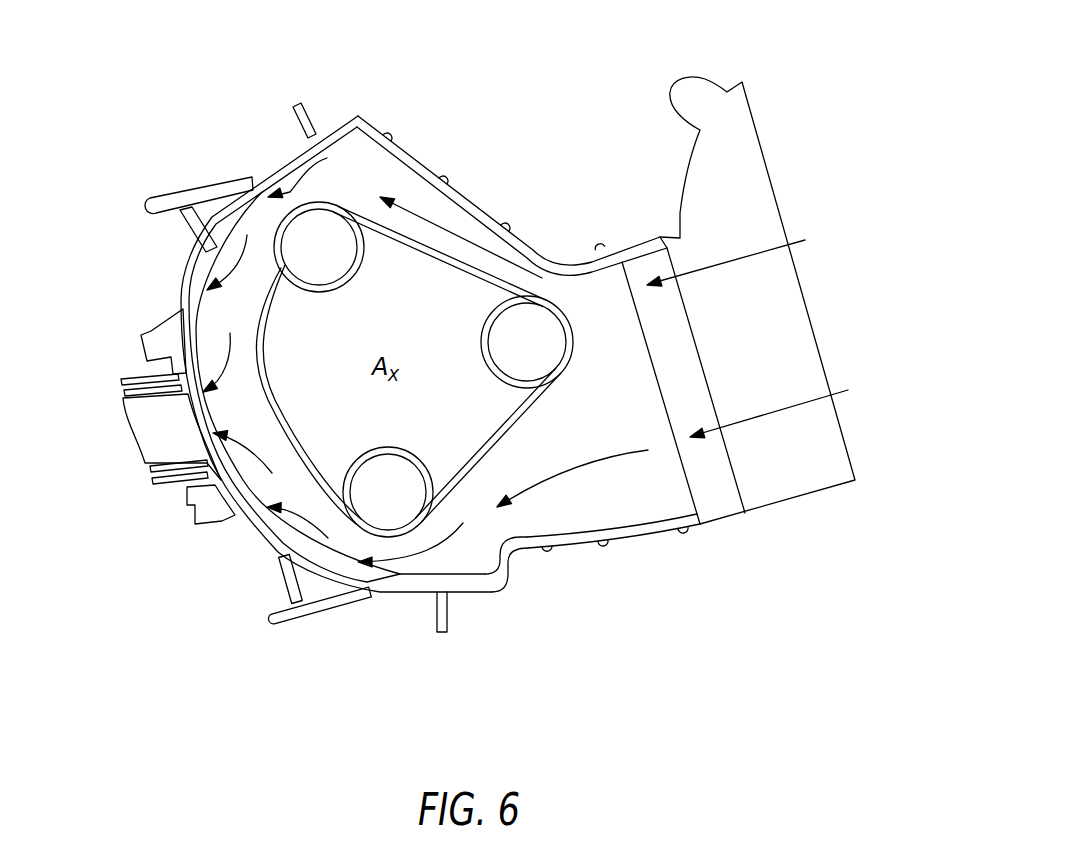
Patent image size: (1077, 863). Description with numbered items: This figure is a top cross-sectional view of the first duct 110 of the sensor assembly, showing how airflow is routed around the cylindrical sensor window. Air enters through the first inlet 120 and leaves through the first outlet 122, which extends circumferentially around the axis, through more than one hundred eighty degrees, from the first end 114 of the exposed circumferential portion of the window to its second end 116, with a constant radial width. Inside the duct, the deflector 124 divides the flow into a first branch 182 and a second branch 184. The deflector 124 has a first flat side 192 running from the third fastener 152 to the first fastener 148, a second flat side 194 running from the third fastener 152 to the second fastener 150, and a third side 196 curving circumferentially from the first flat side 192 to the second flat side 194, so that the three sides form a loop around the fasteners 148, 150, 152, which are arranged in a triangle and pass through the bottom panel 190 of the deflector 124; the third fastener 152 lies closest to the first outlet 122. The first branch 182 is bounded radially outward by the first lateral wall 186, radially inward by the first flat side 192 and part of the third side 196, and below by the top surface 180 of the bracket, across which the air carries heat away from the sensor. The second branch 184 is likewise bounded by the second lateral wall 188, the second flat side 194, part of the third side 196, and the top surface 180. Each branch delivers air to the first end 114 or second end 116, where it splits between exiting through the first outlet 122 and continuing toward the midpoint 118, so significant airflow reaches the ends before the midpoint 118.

The first duct 110 is at (648, 549).
The first end of the circumferential portion 114 is at (358, 116).
The second end of the circumferential portion 116 is at (497, 590).
The midpoint of the circumferential portion 118 is at (200, 430).
The first inlet 120 is at (735, 480).
The first outlet 122 is at (272, 532).
The deflector 124 is at (400, 547).
The first fastener 148 is at (328, 255).
The second fastener 150 is at (395, 480).
The third fastener 152 is at (517, 357).
The top surface of the third panel of the bracket 180 is at (567, 502).
The first branch 182 is at (420, 202).
The second branch 184 is at (453, 552).
The first lateral wall 186 is at (403, 157).
The second lateral wall 188 is at (377, 592).
The bottom panel of the deflector 190 is at (320, 323).
The first flat side 192 is at (458, 257).
The second flat side 194 is at (530, 400).
The third side 196 is at (253, 325).